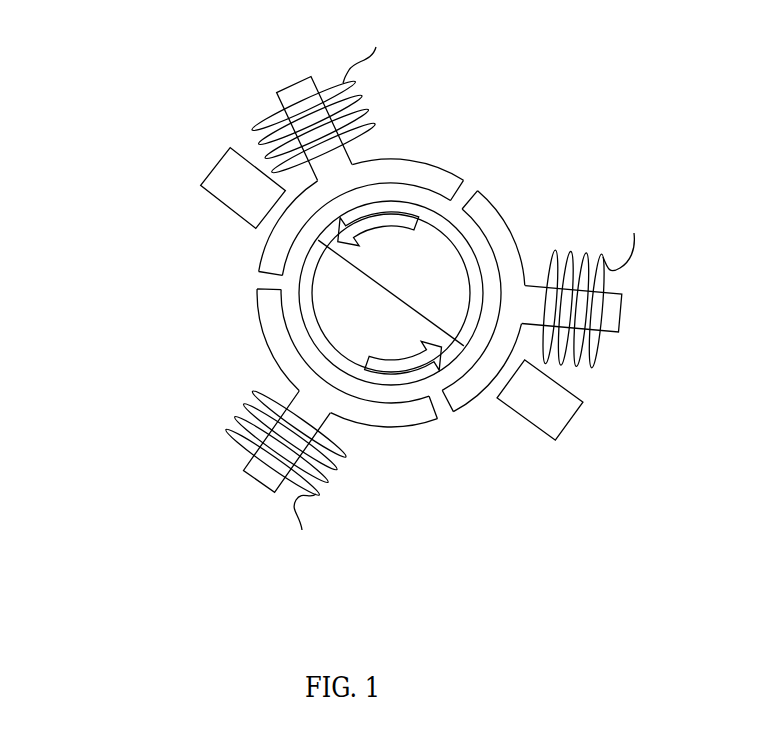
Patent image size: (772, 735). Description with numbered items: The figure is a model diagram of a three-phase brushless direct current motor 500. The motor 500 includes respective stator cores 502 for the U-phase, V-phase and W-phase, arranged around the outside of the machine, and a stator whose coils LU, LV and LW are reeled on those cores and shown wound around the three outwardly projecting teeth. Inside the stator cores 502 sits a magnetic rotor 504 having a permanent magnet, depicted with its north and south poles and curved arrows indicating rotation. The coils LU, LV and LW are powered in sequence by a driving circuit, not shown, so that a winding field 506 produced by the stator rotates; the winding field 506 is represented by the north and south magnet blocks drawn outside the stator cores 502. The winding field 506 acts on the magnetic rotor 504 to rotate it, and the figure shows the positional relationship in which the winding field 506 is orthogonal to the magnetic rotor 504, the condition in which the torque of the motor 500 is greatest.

The three-phase brushless direct current motor 500 is at (370, 320).
The stator core 502 is at (492, 217).
The magnetic rotor 504 is at (320, 317).
The winding field 506 is at (213, 178).